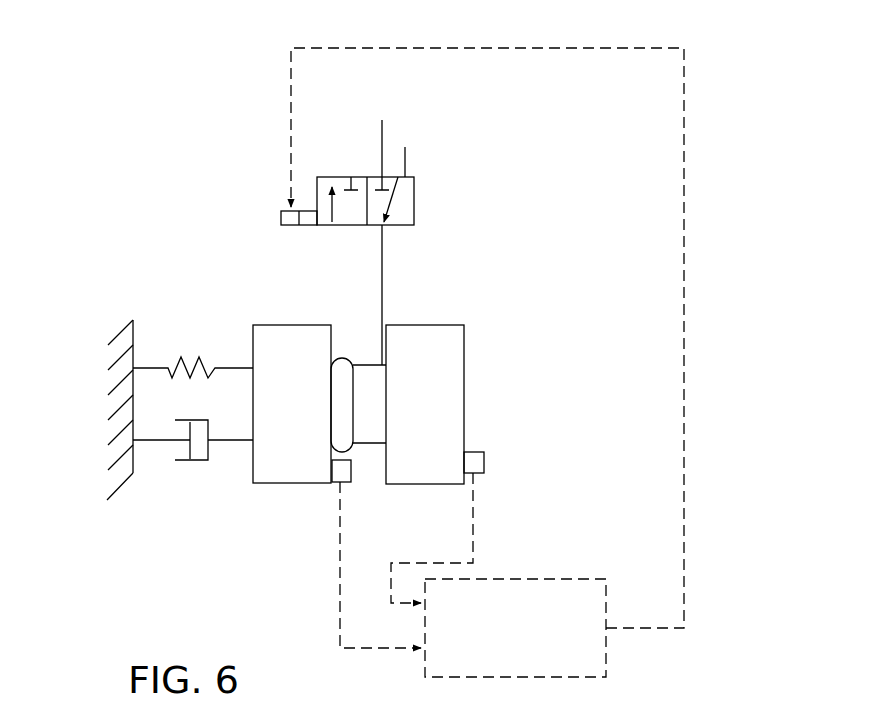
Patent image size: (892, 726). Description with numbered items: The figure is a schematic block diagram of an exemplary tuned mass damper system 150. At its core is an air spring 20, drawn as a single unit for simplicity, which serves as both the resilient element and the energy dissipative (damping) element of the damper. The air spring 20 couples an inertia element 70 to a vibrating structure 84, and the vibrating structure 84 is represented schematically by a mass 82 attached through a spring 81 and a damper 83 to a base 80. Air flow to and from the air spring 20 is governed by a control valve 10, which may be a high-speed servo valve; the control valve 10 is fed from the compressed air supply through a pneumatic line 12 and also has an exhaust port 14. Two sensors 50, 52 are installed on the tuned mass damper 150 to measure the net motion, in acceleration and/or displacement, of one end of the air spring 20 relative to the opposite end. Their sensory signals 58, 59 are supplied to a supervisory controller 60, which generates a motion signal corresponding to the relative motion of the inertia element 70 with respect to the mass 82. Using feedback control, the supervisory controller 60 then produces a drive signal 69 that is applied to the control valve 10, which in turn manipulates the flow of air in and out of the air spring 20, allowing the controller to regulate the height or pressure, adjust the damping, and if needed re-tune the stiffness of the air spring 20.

The tuned mass damper system 150 is at (148, 188).
The vibrating structure 84 is at (185, 295).
The base 80 is at (122, 332).
The spring 81 is at (173, 357).
The damper 83 is at (183, 462).
The mass 82 is at (290, 325).
The air spring 20 is at (345, 358).
The inertia element 70 is at (464, 393).
The exhaust port 14 is at (380, 148).
The pneumatic line 12 is at (405, 161).
The control valve 10 is at (414, 205).
The sensor 50 is at (485, 463).
The sensor 52 is at (346, 482).
The sensory signal 58 is at (473, 527).
The sensory signal 59 is at (338, 582).
The supervisory controller 60 is at (606, 595).
The drive signal 69 is at (684, 380).